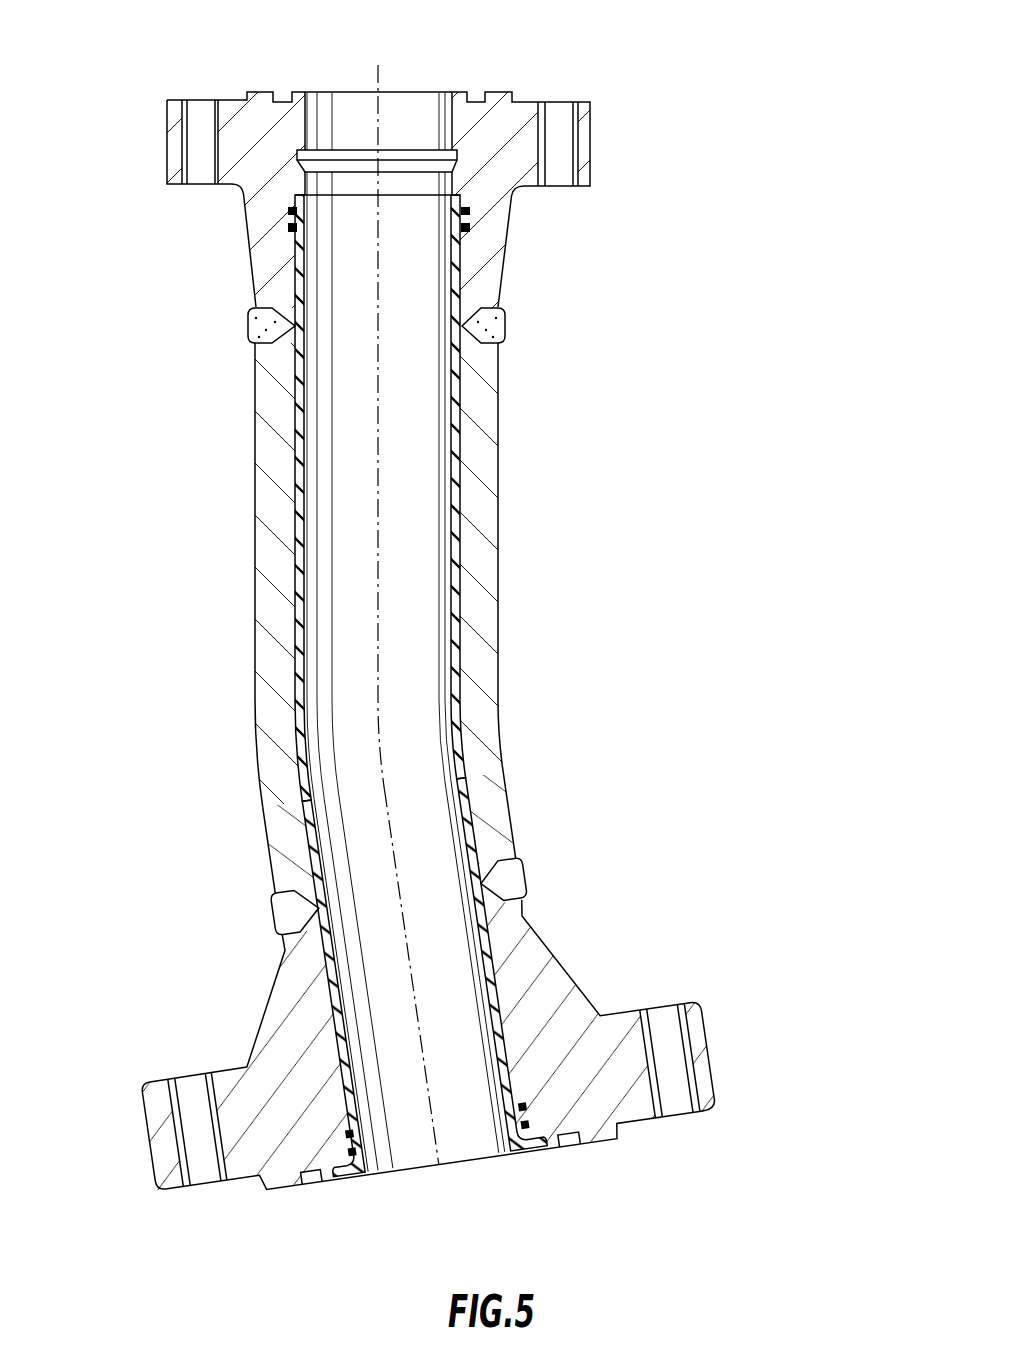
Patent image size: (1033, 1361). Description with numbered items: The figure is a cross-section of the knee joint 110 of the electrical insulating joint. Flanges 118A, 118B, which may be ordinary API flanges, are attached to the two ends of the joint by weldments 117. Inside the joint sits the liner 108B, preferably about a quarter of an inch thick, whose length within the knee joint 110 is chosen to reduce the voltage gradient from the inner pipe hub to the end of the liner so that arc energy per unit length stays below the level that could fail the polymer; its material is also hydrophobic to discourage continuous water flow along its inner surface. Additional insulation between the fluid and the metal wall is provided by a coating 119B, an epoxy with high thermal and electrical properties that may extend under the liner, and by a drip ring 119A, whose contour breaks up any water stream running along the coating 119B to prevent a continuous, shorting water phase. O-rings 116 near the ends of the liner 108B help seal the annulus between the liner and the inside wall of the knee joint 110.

The knee joint 110 is at (212, 624).
The flange 118A is at (499, 142).
The flange 118B is at (560, 1007).
The drip ring 119A is at (356, 158).
The coating 119B is at (452, 122).
The O-rings 116 is at (468, 228).
The weldments 117 is at (505, 325).
The liner 108B is at (461, 472).